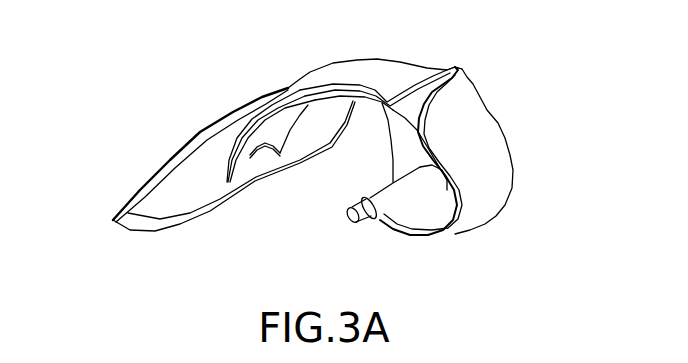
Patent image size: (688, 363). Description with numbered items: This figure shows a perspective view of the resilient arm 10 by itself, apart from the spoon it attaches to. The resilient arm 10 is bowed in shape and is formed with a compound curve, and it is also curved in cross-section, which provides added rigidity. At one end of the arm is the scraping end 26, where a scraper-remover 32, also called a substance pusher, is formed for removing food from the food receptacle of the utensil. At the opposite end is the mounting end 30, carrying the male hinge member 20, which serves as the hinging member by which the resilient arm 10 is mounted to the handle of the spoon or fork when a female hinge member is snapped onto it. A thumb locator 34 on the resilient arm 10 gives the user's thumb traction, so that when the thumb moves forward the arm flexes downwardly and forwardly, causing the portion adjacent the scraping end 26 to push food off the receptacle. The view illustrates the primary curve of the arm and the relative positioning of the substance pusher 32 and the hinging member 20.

The resilient arm 10 is at (458, 142).
The male hinge member 20 is at (336, 217).
The scraping end 26 is at (271, 163).
The mounting end 30 is at (377, 98).
The scraper-remover 32 is at (193, 159).
The thumb locator 34 is at (454, 126).